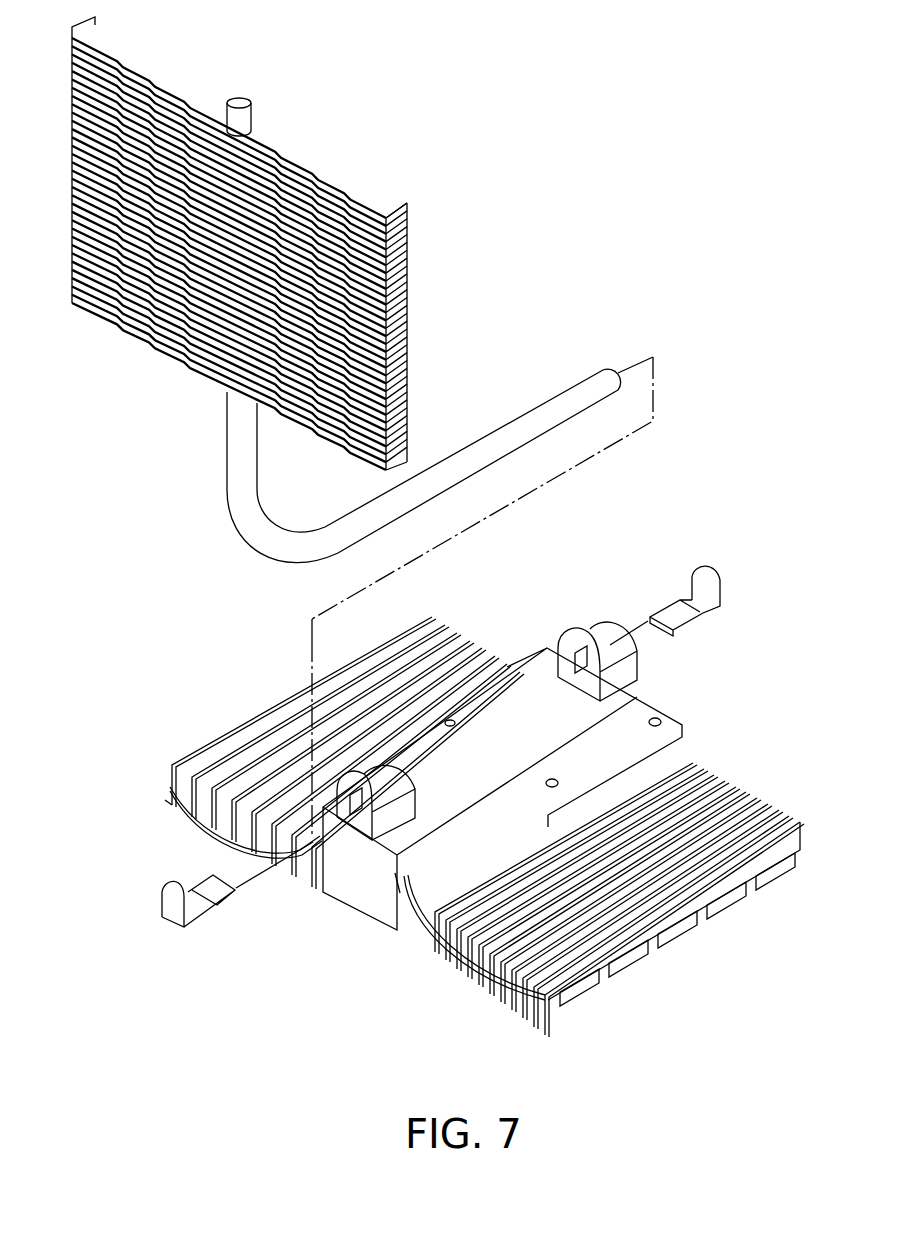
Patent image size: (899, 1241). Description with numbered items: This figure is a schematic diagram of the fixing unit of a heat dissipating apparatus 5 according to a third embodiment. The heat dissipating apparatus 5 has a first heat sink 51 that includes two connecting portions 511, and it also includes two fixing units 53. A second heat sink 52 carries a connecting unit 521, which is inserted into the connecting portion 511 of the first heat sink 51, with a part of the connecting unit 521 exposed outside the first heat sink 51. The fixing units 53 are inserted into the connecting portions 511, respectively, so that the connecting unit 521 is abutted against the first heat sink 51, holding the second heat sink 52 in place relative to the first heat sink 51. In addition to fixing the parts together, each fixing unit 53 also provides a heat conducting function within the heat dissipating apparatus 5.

The heat dissipating apparatus 5 is at (612, 107).
The first heat sink 51 is at (484, 813).
The connecting portion 511 is at (560, 652).
The second heat sink 52 is at (347, 172).
The connecting unit 521 is at (240, 440).
The fixing unit 53 is at (719, 577).